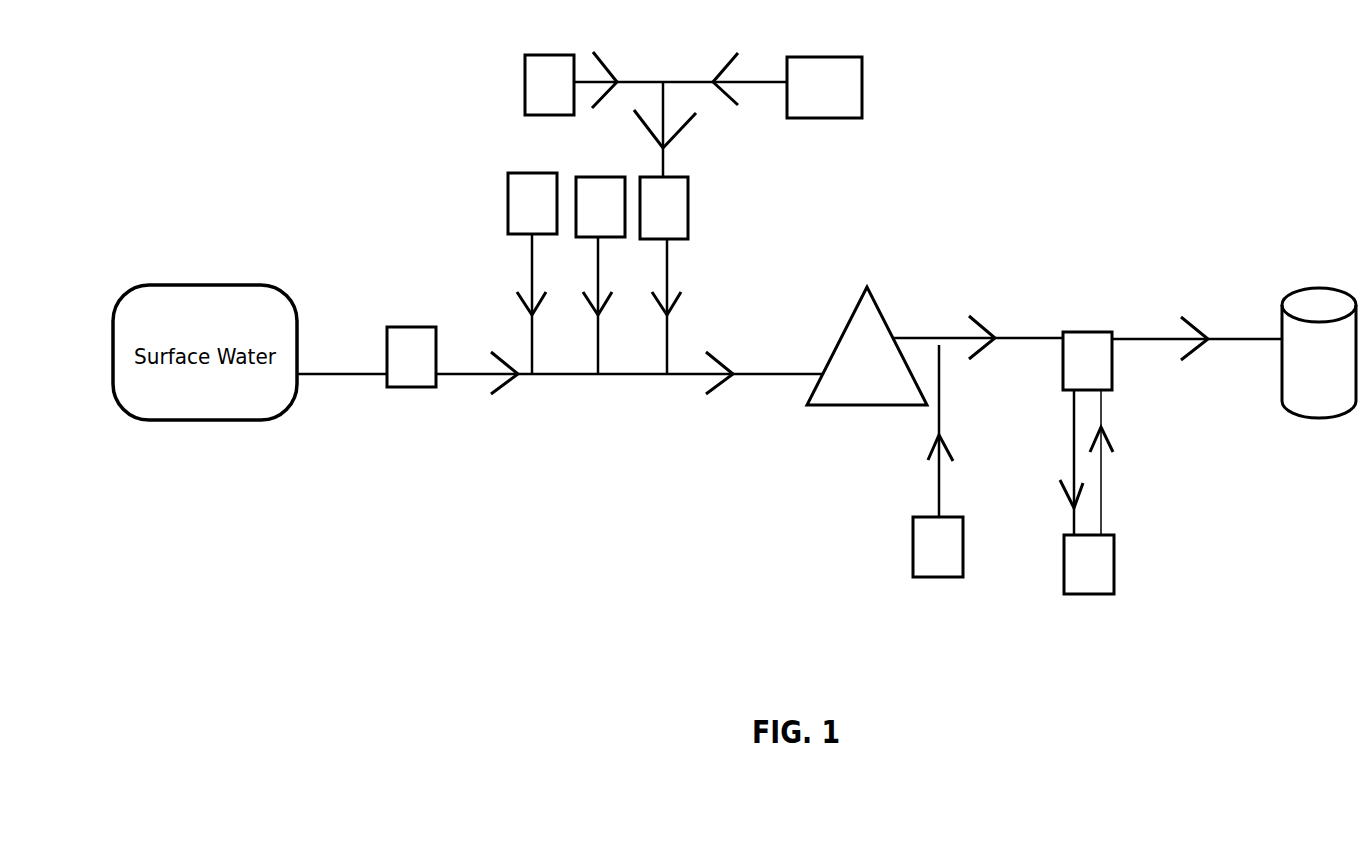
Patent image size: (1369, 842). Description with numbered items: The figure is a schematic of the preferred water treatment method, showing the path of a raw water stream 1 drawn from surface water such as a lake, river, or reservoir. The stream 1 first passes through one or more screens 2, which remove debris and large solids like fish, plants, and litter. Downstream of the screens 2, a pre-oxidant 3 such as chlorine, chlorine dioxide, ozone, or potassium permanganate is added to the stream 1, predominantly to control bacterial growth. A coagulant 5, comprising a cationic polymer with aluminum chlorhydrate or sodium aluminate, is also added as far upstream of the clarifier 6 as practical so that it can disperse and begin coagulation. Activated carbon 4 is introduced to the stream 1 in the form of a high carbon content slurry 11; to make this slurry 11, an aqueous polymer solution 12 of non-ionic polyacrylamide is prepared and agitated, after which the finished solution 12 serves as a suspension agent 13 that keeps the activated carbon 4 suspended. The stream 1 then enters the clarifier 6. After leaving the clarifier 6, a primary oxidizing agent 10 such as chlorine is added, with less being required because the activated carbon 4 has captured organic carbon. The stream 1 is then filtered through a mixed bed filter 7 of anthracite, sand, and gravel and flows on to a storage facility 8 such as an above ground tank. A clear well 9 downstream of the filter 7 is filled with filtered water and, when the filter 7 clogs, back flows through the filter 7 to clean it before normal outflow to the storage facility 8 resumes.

The raw water stream 1 is at (357, 374).
The screens 2 is at (411, 357).
The pre-oxidant 3 is at (532, 273).
The activated carbon 4 is at (594, 83).
The coagulant 5 is at (600, 275).
The clarifier 6 is at (867, 346).
The mixed bed filter 7 is at (1087, 361).
The storage facility 8 is at (1319, 353).
The clear well 9 is at (1087, 492).
The primary oxidizing agent 10 is at (938, 461).
The high carbon content slurry 11 is at (665, 228).
The aqueous polymer solution 12 is at (763, 85).
The suspension agent 13 is at (763, 85).